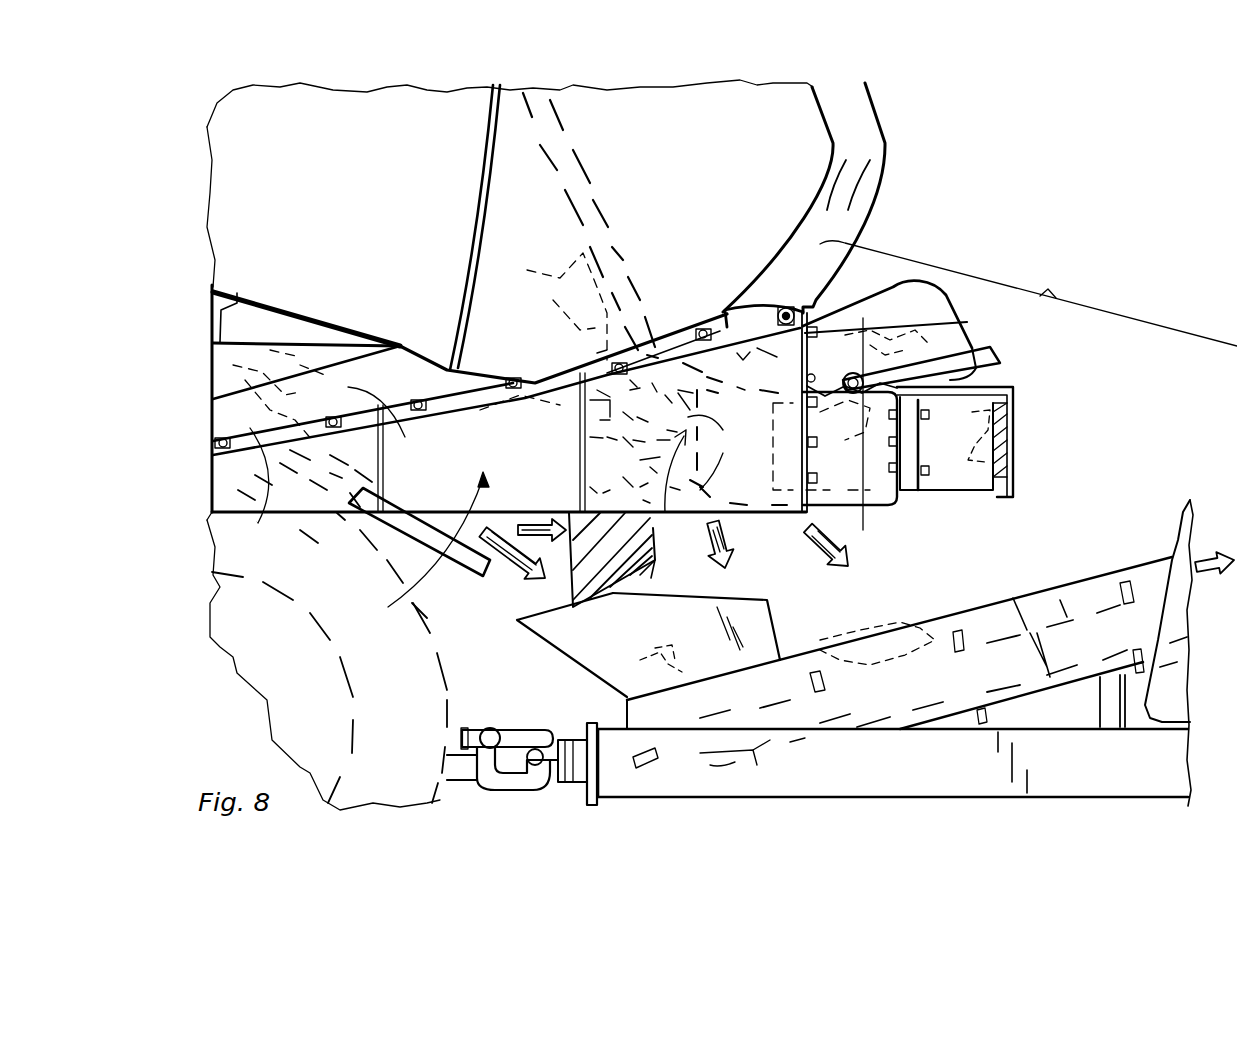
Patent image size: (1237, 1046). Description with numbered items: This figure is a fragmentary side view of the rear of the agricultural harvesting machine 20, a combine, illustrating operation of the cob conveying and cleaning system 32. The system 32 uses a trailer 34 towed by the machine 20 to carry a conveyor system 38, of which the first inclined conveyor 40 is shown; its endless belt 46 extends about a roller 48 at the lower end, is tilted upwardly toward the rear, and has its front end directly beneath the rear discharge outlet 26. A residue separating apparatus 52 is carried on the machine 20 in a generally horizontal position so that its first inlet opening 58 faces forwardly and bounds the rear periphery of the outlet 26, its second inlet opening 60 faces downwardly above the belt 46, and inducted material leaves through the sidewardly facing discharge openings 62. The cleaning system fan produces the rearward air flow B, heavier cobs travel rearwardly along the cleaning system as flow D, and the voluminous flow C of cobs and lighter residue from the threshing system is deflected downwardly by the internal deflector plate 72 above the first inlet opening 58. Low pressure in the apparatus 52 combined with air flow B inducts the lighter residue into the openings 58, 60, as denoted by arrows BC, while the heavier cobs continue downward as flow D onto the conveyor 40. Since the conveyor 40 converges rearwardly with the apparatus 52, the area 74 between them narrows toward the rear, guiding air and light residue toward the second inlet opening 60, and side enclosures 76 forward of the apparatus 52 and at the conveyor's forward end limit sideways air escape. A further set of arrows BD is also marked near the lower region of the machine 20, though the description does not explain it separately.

The agricultural harvesting machine 20 is at (947, 122).
The rear discharge outlet 26 is at (404, 592).
The cob conveying and cleaning system 32 is at (980, 214).
The trailer 34 is at (1074, 798).
The conveyor system 38 is at (1147, 553).
The first inclined conveyor 40 is at (1190, 653).
The endless belt 46 is at (1060, 620).
The roller 48 is at (705, 757).
The residue separating apparatus 52 is at (967, 322).
The first inlet opening 58 is at (673, 492).
The second inlet opening 60 is at (874, 512).
The sidewardly facing discharge openings 62 is at (953, 467).
The internal deflector plate 72 is at (547, 157).
The area between conveyor and separating apparatus 74 is at (828, 617).
The side enclosures 76 is at (408, 551).
The air flow arrows B is at (450, 423).
The induction flow arrows BC is at (607, 412).
The airflow direction BD is at (250, 535).
The threshing residue flow arrows C is at (530, 312).
The cob flow arrows D is at (503, 573).